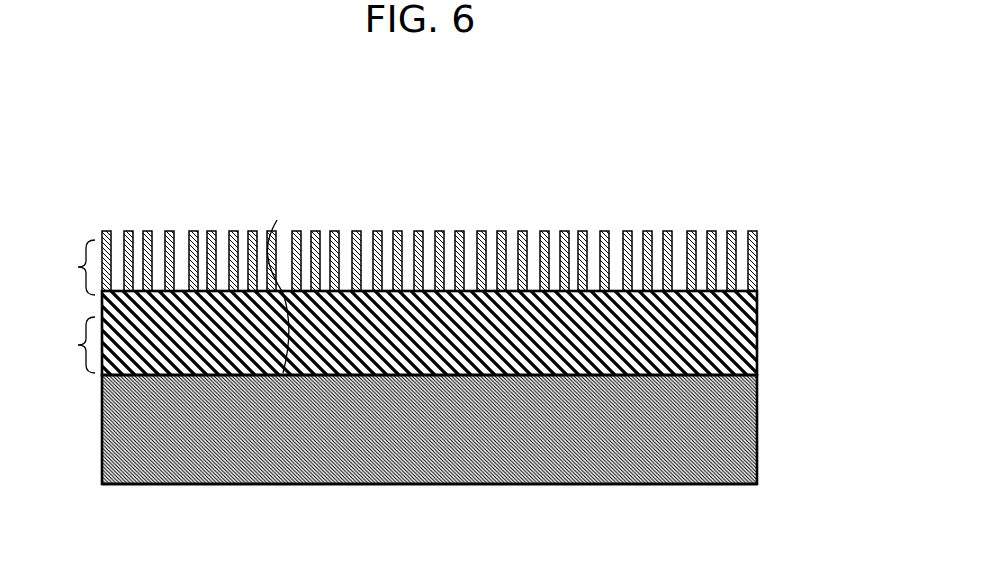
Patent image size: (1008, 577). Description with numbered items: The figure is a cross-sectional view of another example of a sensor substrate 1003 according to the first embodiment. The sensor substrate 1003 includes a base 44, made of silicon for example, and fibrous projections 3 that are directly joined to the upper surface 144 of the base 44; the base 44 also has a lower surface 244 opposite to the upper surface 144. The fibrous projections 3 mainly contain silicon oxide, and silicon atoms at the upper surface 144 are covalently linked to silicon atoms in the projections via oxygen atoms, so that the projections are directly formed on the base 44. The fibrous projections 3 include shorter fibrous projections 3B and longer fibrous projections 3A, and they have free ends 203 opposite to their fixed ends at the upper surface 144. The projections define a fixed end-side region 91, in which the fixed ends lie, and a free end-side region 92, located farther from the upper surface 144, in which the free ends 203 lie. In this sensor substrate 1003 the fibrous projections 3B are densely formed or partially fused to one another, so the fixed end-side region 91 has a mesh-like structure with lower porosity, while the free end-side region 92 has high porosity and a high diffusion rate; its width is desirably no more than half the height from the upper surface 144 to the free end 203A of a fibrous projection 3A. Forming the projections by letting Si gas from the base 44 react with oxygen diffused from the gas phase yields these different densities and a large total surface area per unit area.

The sensor substrate 1003 is at (743, 163).
The base 44 is at (757, 442).
The lower surface 244 is at (242, 484).
The fibrous projections 3 is at (455, 270).
The fibrous projections 3A is at (455, 230).
The fibrous projections 3B is at (743, 325).
The free ends 203 is at (429, 228).
The free end 203A is at (547, 230).
The upper surface 144 is at (278, 285).
The fixed end-side region 91 is at (70, 345).
The free end-side region 92 is at (70, 267).